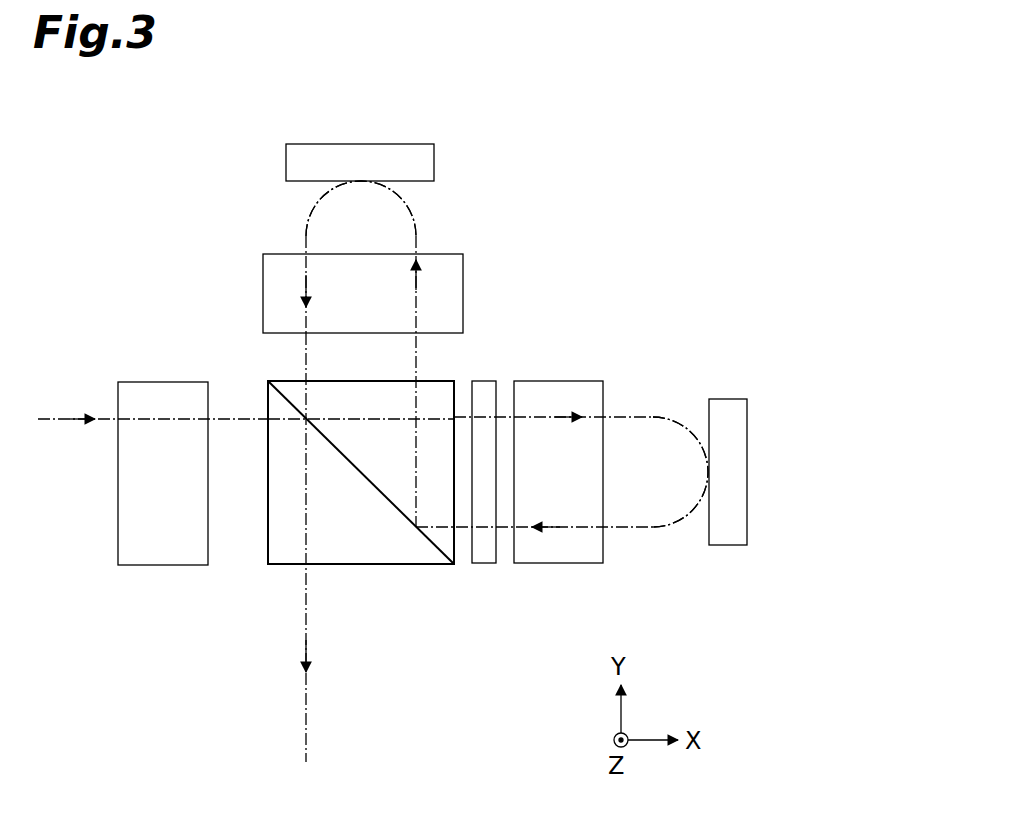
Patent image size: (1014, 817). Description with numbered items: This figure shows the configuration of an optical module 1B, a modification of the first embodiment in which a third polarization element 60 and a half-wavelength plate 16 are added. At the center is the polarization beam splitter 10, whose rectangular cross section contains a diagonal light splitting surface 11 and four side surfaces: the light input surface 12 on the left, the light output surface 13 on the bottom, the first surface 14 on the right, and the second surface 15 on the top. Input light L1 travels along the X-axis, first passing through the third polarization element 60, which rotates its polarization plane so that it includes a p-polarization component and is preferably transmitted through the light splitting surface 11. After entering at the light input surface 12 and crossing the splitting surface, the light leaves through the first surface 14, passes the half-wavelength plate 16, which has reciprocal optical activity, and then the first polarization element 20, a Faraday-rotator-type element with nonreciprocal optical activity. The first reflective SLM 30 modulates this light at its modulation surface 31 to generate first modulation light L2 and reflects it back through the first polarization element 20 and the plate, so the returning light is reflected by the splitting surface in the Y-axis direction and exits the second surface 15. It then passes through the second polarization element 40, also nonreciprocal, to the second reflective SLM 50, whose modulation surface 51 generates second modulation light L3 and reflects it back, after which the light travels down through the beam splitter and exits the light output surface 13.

The optical module 1B is at (653, 145).
The polarization beam splitter 10 is at (410, 568).
The light splitting surface 11 is at (360, 473).
The light input surface 12 is at (268, 538).
The light output surface 13 is at (290, 566).
The first surface 14 is at (455, 560).
The second surface 15 is at (428, 380).
The ½-wavelength plate 16 is at (487, 380).
The first polarization element 20 is at (562, 380).
The first reflective SLM 30 is at (727, 398).
The modulation surface 31 is at (709, 417).
The second polarization element 40 is at (262, 293).
The second reflective SLM 50 is at (373, 143).
The modulation surface 51 is at (425, 182).
The third polarization element 60 is at (163, 566).
The input light L1 is at (240, 417).
The first modulation light L2 is at (632, 528).
The second modulation light L3 is at (305, 240).